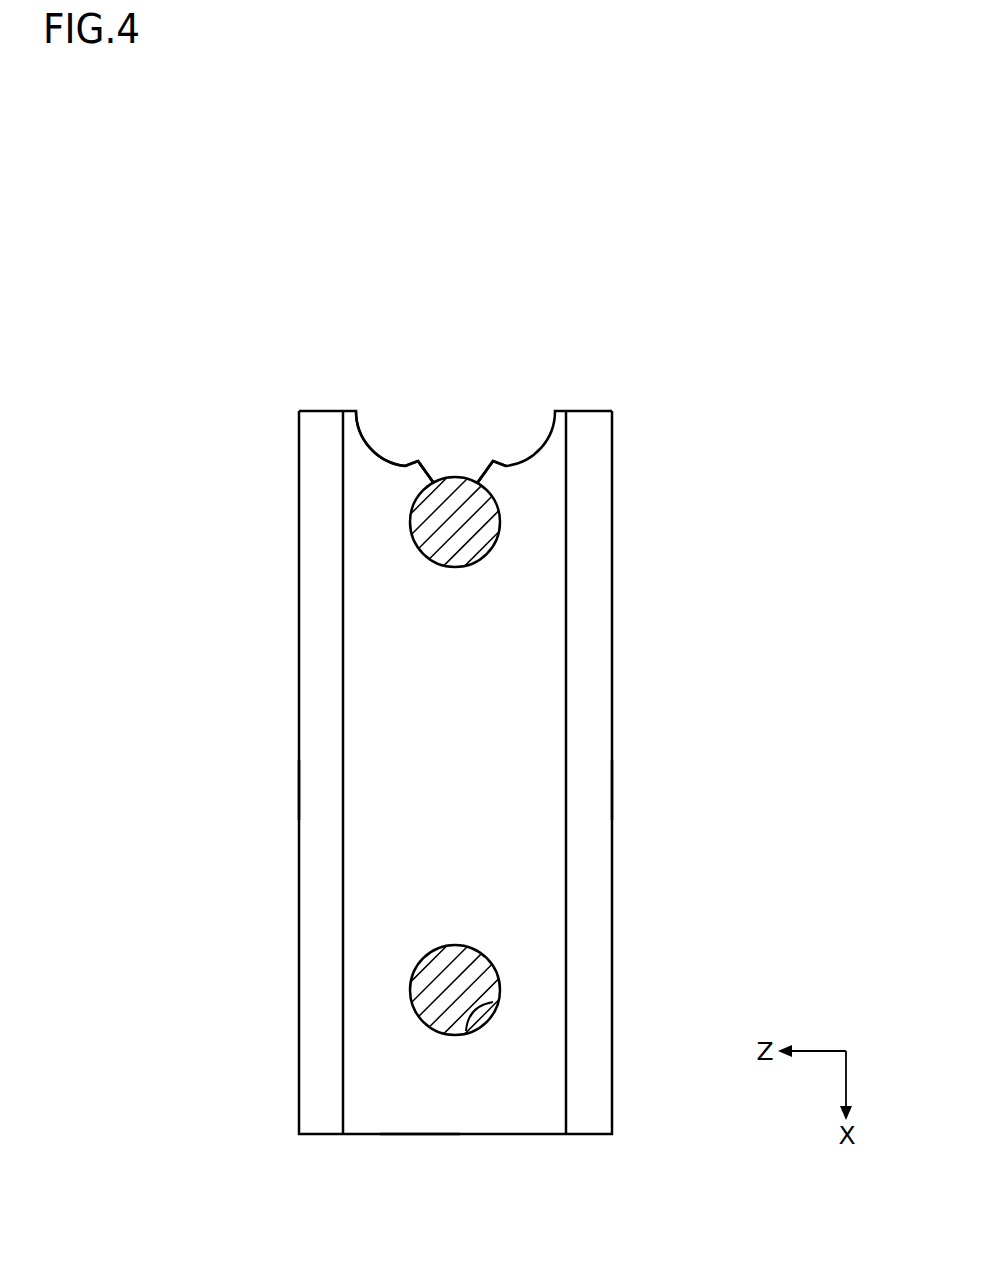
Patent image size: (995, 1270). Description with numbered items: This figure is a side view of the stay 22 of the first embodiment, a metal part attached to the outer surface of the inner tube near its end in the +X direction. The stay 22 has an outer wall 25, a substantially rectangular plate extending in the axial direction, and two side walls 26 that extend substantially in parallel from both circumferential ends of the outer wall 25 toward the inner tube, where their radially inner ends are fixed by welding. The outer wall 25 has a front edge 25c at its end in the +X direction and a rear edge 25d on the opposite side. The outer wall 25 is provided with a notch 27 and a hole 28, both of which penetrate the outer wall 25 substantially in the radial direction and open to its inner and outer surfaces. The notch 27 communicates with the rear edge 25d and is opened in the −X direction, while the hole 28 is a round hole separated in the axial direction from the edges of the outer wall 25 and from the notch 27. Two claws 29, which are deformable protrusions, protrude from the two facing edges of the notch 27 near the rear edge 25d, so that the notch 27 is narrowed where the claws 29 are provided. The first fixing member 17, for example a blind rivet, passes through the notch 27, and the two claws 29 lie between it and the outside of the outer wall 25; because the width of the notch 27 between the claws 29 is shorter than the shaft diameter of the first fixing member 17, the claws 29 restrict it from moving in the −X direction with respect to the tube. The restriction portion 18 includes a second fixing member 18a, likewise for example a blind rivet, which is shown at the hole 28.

The stay 22 is at (226, 306).
The outer wall 25 is at (368, 660).
The front edge 25c is at (415, 1134).
The rear edge 25d is at (381, 460).
The side walls 26 is at (299, 788).
The notch 27 is at (467, 458).
The hole 28 is at (467, 1035).
The claws 29 is at (413, 477).
The first fixing member 17 is at (487, 537).
The restriction portion 18 is at (480, 968).
The second fixing member 18a is at (455, 990).